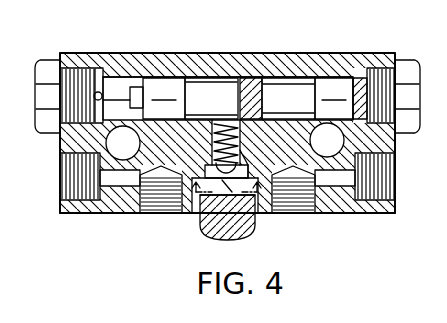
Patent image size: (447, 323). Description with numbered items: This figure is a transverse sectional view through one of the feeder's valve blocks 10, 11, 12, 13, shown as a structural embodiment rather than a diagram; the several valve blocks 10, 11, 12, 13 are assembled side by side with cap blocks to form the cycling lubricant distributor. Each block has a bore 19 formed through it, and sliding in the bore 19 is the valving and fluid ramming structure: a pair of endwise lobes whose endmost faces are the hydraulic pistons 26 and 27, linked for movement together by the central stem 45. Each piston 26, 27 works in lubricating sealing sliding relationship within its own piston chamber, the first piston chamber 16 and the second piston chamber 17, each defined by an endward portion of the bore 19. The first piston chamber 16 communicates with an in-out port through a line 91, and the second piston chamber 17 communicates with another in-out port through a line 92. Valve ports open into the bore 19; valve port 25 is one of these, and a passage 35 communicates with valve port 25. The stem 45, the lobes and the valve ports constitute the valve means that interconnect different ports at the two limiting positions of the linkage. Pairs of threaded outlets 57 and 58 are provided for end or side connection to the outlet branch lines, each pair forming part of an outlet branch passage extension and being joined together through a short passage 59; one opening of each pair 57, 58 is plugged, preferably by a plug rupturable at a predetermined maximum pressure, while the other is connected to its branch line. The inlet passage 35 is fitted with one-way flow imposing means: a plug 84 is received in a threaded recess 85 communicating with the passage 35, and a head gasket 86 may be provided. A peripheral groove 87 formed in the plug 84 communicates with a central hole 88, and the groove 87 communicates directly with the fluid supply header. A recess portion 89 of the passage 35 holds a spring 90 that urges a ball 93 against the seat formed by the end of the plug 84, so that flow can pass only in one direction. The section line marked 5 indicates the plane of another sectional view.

The valve block 10 is at (133, 58).
The valve block 11 is at (227, 133).
The valve block 12 is at (227, 133).
The valve block 13 is at (227, 133).
The first piston chamber 16 is at (115, 90).
The second piston chamber 17 is at (364, 74).
The bore 19 is at (212, 75).
The valve port 25 is at (214, 124).
The piston 26 is at (138, 75).
The piston 27 is at (357, 74).
The inlet passage 35 is at (228, 195).
The central stem 45 is at (273, 92).
The section line 5- 5 is at (226, 196).
The threaded outlet 57 is at (60, 185).
The threaded outlet 58 is at (130, 214).
The short passage 59 is at (88, 214).
The plug 84 is at (252, 232).
The threaded recess 85 is at (197, 230).
The head gasket 86 is at (198, 226).
The peripheral groove 87 is at (200, 178).
The central hole 88 is at (244, 172).
The recess portion 89 is at (242, 150).
The spring 90 is at (243, 112).
The line 91 is at (99, 91).
The line 92 is at (396, 138).
The ball 93 is at (205, 180).